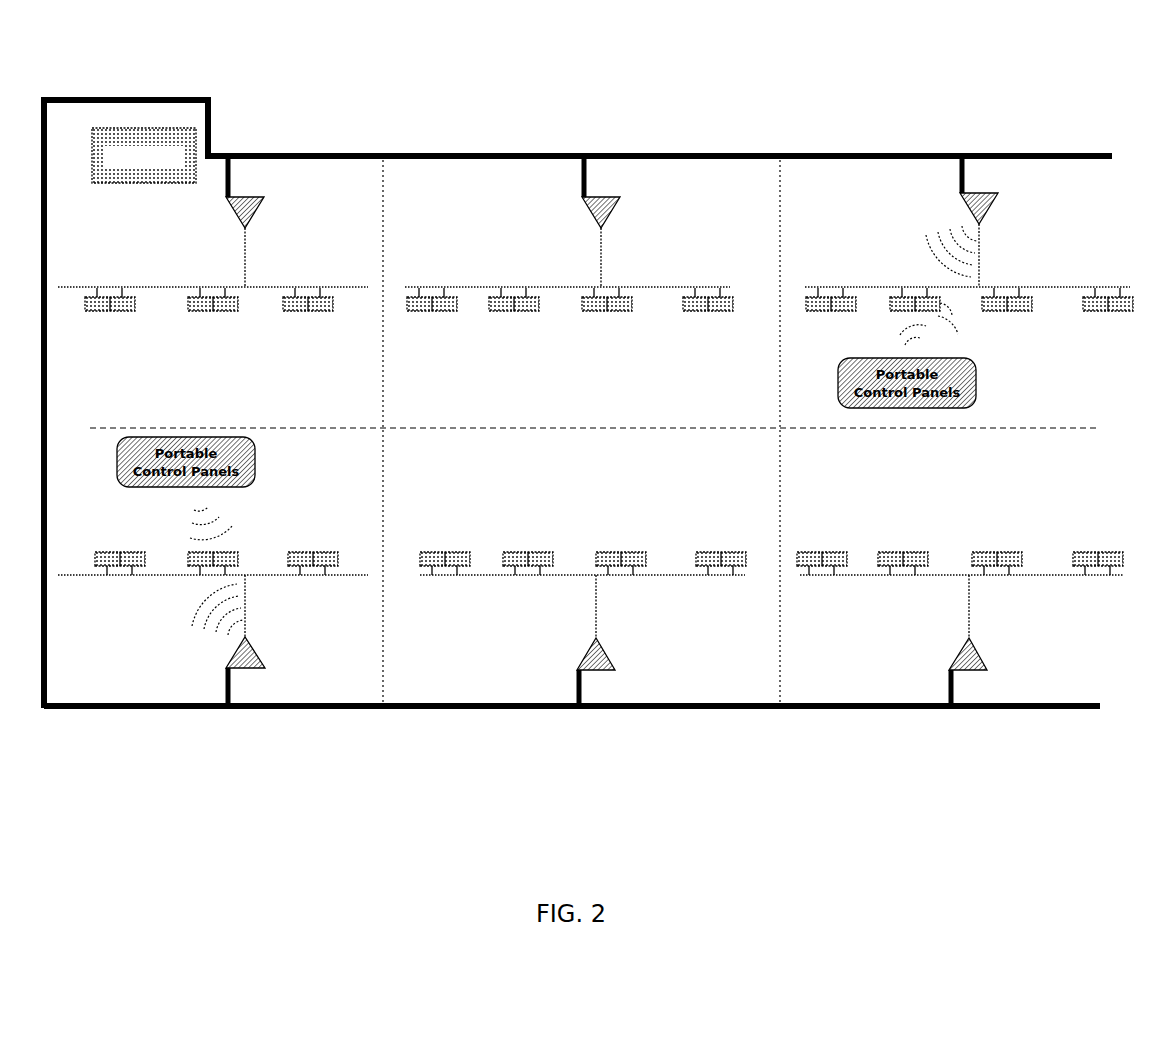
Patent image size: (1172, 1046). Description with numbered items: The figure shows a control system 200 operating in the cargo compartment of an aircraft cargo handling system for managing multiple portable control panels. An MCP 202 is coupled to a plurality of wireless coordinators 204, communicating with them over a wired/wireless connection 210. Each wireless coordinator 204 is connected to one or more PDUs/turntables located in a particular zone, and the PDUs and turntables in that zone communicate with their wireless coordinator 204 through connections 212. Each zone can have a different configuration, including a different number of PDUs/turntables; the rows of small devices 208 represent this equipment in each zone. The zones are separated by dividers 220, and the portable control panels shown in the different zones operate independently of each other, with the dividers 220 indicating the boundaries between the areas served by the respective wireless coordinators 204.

The control system 200 is at (592, 28).
The MCP 202 is at (192, 138).
The wireless coordinators 204 is at (625, 197).
The field devices 208 is at (332, 298).
The wired/wireless connection 210 is at (423, 710).
The connections 212 is at (158, 573).
The dividers 220 is at (780, 640).